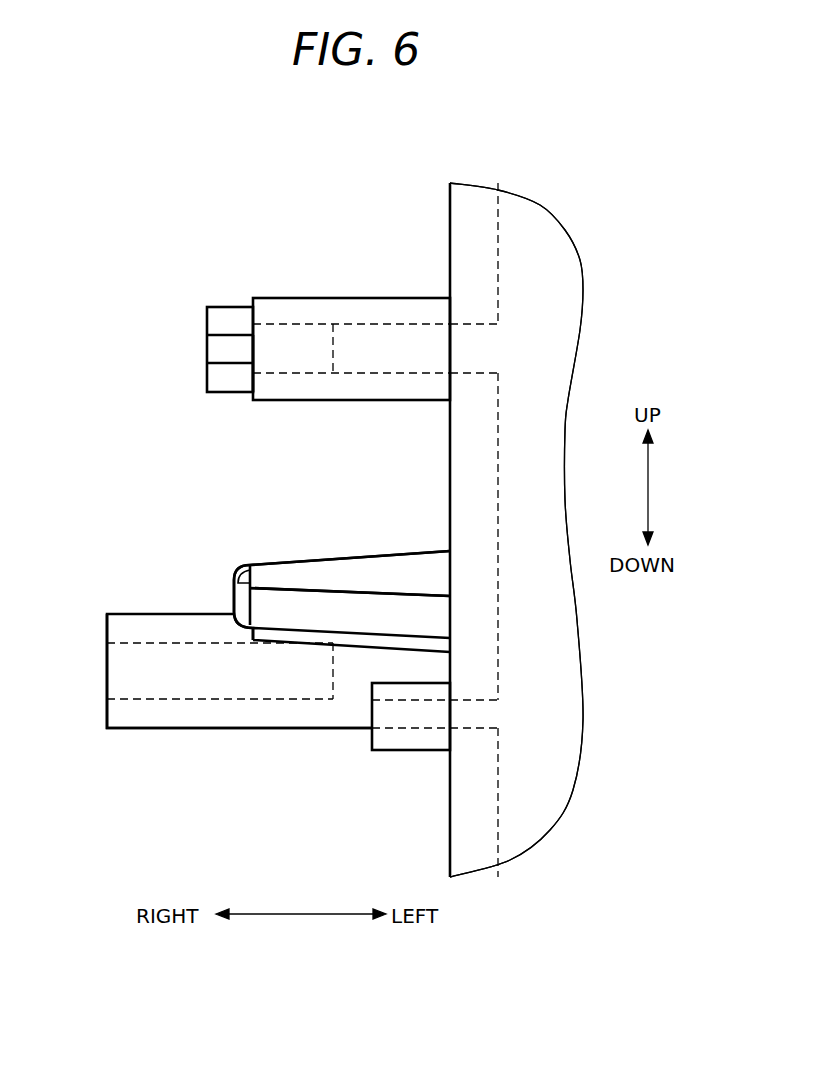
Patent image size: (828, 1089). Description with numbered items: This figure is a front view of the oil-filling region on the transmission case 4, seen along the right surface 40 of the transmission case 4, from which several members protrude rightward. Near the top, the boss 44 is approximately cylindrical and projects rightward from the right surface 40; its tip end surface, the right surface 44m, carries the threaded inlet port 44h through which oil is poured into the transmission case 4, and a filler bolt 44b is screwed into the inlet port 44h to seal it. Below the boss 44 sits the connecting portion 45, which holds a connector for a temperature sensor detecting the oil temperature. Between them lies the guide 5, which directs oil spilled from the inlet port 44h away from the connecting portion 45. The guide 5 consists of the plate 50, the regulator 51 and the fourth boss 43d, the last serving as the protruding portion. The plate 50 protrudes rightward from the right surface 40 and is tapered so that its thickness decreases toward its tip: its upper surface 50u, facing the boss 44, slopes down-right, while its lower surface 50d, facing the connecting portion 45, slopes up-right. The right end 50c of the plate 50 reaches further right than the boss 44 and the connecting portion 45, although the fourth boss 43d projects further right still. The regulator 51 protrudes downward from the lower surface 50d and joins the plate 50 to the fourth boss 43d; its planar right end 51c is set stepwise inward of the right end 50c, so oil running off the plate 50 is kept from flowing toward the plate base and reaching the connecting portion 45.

The transmission case 4 is at (620, 250).
The guide 5 is at (120, 565).
The right surface 40 is at (450, 216).
The fourth boss 43d is at (147, 714).
The boss 44 is at (360, 388).
The filler bolt 44b is at (207, 318).
The inlet port 44h is at (250, 347).
The right surface of boss 44m is at (252, 383).
The connecting portion 45 is at (401, 752).
The plate 50 is at (226, 576).
The right end of plate 50c is at (234, 598).
The lower surface 50d is at (312, 606).
The upper surface 50u is at (359, 557).
The regulator 51 is at (310, 638).
The right end of regulator 51c is at (252, 636).